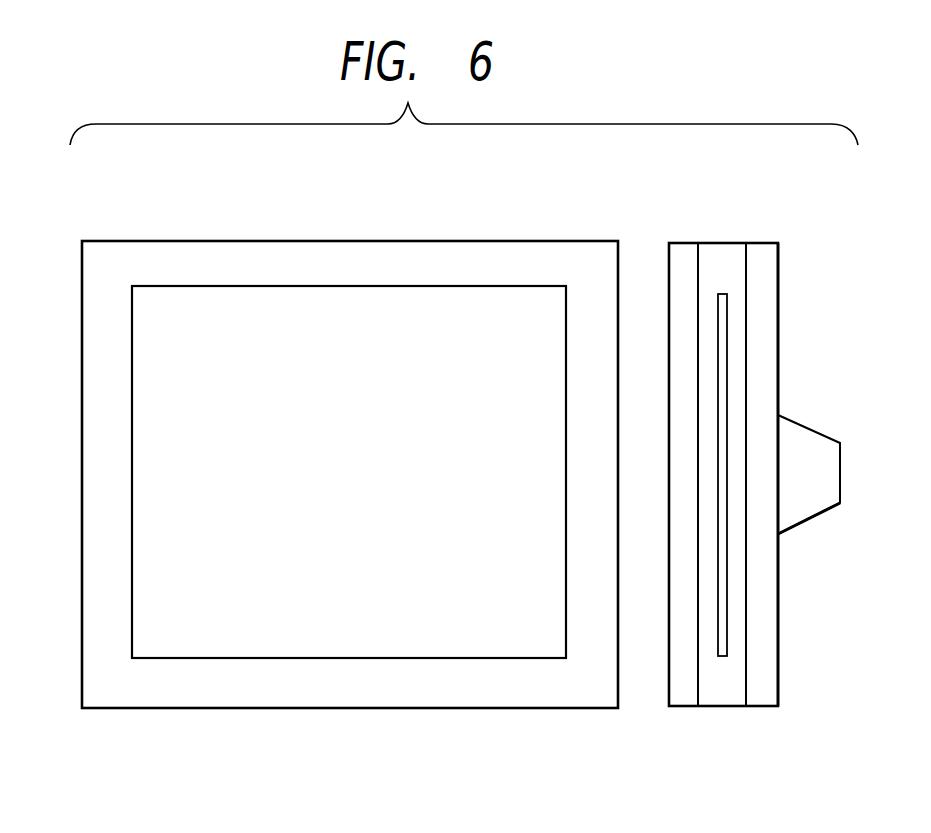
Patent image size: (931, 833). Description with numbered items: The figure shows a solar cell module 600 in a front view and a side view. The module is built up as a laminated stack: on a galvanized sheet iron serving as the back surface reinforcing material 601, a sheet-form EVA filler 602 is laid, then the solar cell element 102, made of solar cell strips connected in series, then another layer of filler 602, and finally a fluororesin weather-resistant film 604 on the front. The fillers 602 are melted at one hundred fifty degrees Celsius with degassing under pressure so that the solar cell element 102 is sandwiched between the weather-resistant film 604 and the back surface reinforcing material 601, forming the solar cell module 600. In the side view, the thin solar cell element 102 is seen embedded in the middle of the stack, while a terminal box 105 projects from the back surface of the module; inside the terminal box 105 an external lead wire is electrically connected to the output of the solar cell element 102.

The solar cell module 600 is at (362, 783).
The solar cell element 102 is at (362, 286).
The weather-resistant film 604 is at (676, 262).
The filler 602 is at (721, 698).
The back surface reinforcing material 601 is at (770, 700).
The terminal box 105 is at (820, 503).